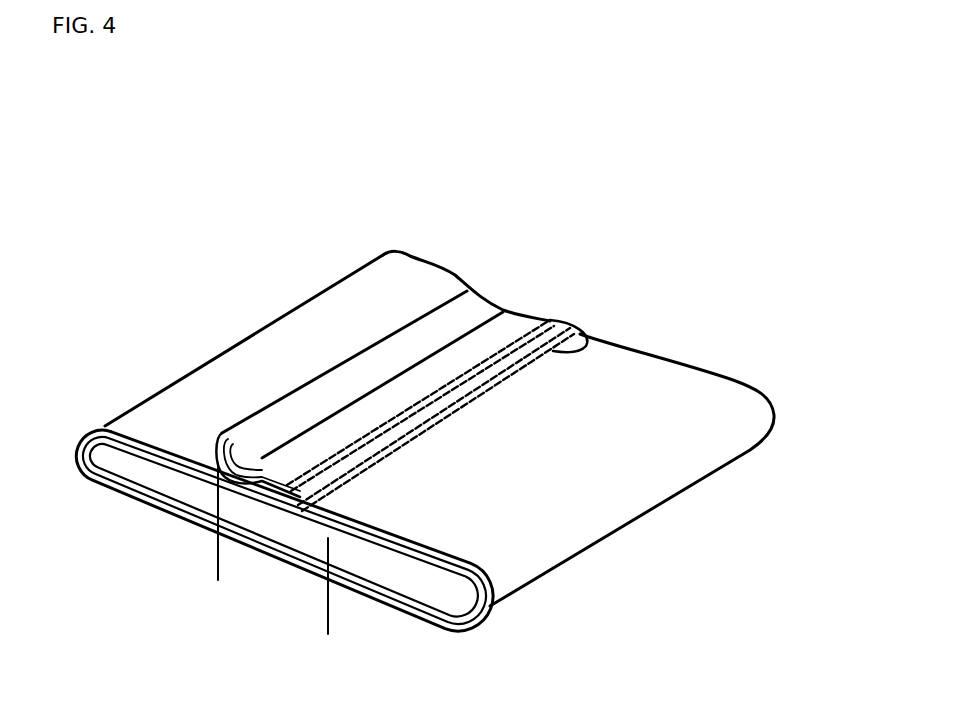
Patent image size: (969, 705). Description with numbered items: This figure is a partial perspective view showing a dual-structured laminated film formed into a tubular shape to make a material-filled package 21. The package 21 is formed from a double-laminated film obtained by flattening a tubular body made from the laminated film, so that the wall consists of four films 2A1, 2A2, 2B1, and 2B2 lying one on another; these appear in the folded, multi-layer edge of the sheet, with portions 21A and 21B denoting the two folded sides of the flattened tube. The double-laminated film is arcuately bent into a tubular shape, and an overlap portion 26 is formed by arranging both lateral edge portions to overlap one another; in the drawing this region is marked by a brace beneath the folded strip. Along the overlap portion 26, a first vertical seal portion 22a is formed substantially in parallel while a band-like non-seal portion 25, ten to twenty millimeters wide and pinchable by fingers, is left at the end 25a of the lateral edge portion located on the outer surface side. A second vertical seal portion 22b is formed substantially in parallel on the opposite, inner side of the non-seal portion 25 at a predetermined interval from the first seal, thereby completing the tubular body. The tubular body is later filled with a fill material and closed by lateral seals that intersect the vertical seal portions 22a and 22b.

The material-filled package 21 is at (655, 531).
The first sheet portion 21A is at (97, 480).
The second sheet portion 21B is at (104, 424).
The film 2A1 is at (123, 498).
The film 2A2 is at (155, 492).
The film 2B1 is at (134, 454).
The film 2B2 is at (165, 437).
The first vertical seal portion 22a is at (531, 334).
The second vertical seal portion 22b is at (553, 348).
The non-seal portion 25 is at (263, 427).
The end of lateral edge portion 25a is at (380, 340).
The overlap portion 26 is at (328, 630).